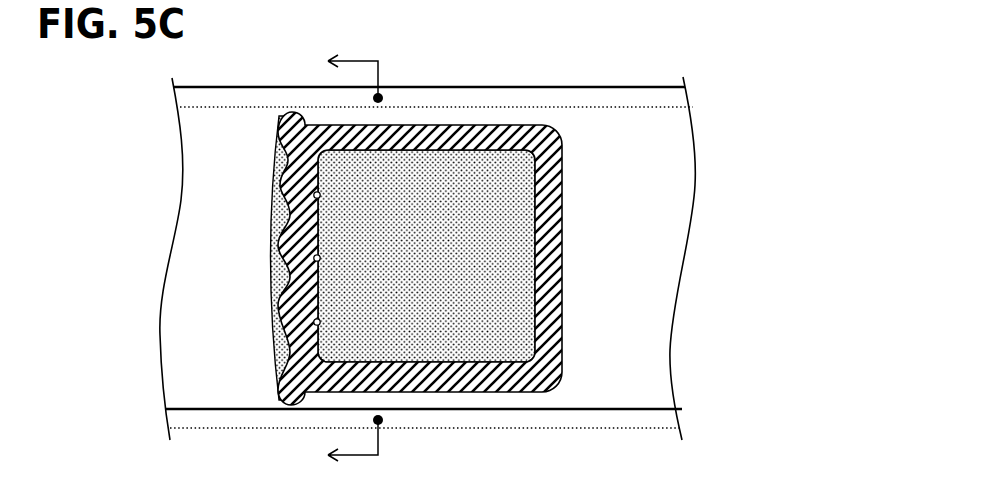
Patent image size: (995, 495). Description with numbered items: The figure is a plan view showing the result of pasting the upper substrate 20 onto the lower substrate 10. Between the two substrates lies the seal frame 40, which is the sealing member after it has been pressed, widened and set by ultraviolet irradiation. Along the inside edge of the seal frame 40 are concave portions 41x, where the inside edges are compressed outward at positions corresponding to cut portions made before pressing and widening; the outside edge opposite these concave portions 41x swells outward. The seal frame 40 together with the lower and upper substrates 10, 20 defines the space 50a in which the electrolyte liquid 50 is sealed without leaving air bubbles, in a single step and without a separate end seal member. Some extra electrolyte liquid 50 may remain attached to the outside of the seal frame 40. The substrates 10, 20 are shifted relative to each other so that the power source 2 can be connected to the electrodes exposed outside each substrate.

The power source 2 is at (340, 259).
The lower substrate 10 is at (230, 87).
The upper substrate 20 is at (598, 430).
The seal frame 40 is at (426, 122).
The concave portions 41x is at (321, 321).
The electrolyte liquid 50 is at (267, 229).
The space 50a is at (475, 180).